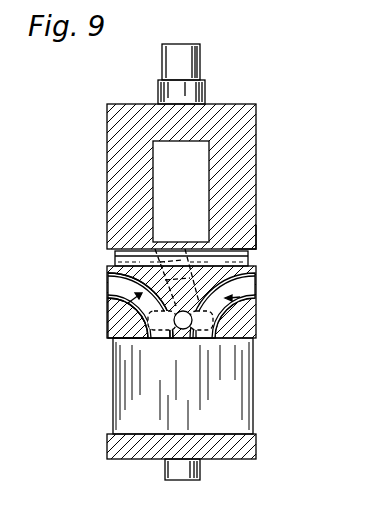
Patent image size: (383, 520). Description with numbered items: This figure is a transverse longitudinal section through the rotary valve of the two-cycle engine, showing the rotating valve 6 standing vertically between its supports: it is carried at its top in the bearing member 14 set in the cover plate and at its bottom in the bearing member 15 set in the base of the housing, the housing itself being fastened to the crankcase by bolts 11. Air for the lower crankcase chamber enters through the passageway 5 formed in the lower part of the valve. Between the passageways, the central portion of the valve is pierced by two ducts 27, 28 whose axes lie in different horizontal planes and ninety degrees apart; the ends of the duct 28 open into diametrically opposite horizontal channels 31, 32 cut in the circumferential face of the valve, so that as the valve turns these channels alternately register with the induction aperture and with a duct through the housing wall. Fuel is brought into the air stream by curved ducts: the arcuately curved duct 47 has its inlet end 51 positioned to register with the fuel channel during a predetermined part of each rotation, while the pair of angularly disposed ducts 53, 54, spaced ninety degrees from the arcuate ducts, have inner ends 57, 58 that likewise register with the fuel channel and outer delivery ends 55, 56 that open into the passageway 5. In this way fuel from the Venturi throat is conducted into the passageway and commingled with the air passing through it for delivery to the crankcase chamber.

The bearing member 14 is at (187, 63).
The rotating valve 6 is at (102, 137).
The bolt 11 is at (160, 163).
The inner or inlet end of duct 51 is at (197, 239).
The duct 27 is at (252, 248).
The channel 31 is at (250, 257).
The channel 32 is at (114, 258).
The duct 53 is at (256, 303).
The inner end of duct 58 is at (240, 297).
The inner end of duct 57 is at (107, 292).
The duct 47 is at (125, 280).
The duct 54 is at (108, 331).
The outer or delivery end of duct 56 is at (208, 338).
The outer or delivery end of duct 55 is at (165, 330).
The duct 28 is at (184, 330).
The passageway 5 is at (240, 388).
The bearing member 15 is at (201, 472).